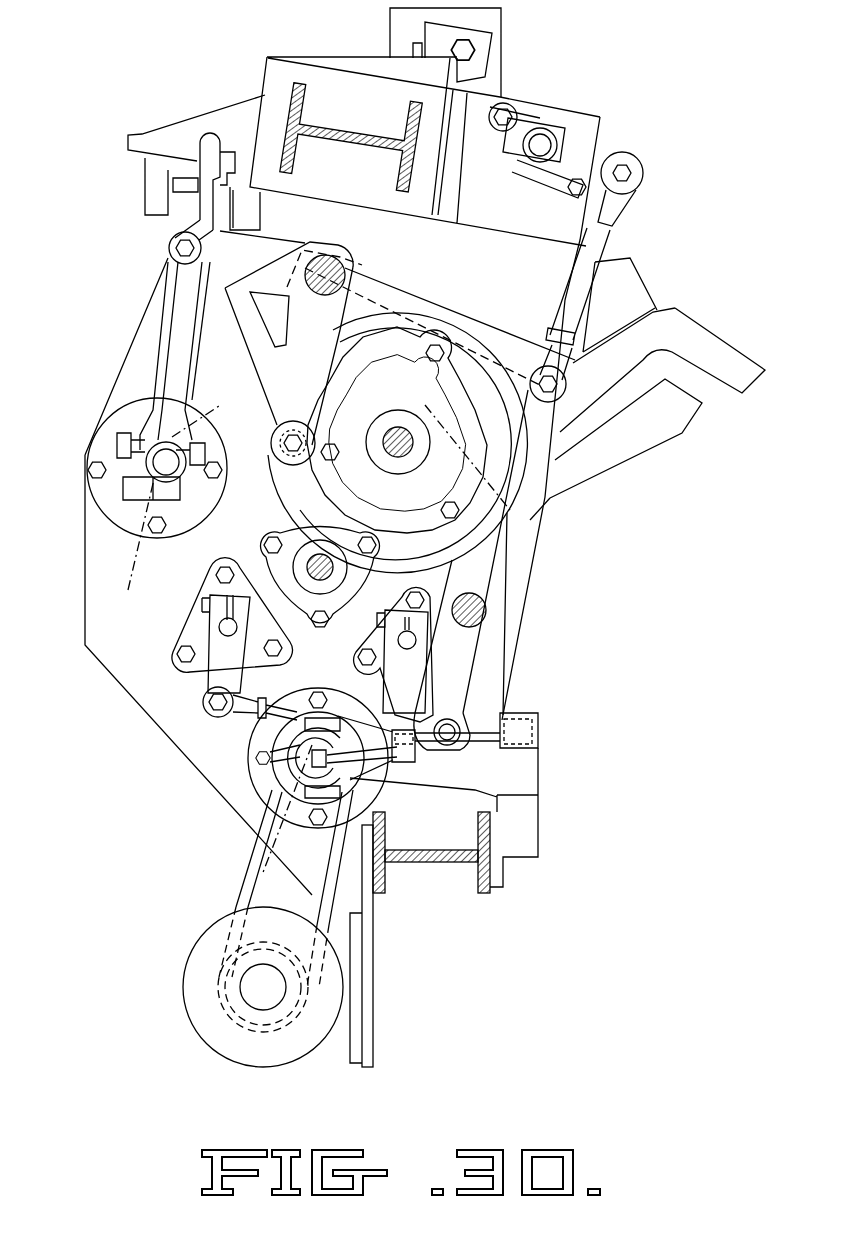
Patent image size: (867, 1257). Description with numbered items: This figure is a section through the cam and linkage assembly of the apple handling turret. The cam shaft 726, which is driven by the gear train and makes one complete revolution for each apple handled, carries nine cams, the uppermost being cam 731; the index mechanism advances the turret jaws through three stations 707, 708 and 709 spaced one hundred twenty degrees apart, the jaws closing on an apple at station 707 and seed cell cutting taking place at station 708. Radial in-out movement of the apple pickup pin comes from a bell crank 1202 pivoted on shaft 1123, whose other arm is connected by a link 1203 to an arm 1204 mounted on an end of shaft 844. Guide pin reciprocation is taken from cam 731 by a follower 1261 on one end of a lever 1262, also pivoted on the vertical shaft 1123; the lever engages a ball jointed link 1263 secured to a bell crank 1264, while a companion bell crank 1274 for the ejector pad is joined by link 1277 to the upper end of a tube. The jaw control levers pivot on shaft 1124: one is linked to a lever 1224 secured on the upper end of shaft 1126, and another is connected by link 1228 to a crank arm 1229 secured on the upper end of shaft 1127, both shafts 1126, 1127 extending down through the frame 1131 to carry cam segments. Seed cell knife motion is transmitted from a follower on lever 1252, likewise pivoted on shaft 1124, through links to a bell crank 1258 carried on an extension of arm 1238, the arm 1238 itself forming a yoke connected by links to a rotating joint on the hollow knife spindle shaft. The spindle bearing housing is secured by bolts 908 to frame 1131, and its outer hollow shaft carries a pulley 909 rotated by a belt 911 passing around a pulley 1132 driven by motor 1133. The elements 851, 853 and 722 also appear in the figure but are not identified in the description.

The shaft 844 is at (545, 148).
The arm 1204 is at (610, 162).
The ball jointed link 1263 is at (197, 195).
The shaft 1123 is at (342, 272).
The bell crank 1202 is at (513, 307).
The link 1203 is at (603, 258).
The mounting block 853 is at (650, 297).
The bell crank 1264 is at (178, 294).
The bell crank 1274 is at (163, 338).
The lever 1262 is at (297, 370).
The cam shaft 726 is at (392, 430).
The follower 1261 is at (280, 425).
The link 1277 is at (115, 412).
The station 709 is at (110, 485).
The cam 731 is at (297, 477).
The bearing 722 is at (303, 557).
The station 707 is at (550, 497).
The arm 851 is at (638, 447).
The shaft 1127 is at (220, 622).
The crank arm 1229 is at (213, 648).
The shaft 1124 is at (473, 607).
The shaft 1126 is at (400, 643).
The lever 1224 is at (383, 682).
The lever 1252 is at (470, 685).
The frame 1131 is at (133, 683).
The link 1228 is at (247, 717).
The bolts 908 is at (254, 757).
The pulley 909 is at (265, 762).
The belt 911 is at (250, 840).
The station 708 is at (285, 818).
The bell crank 1258 is at (397, 763).
The arm 1238 is at (497, 808).
The pulley 1132 is at (220, 977).
The motor 1133 is at (193, 1002).